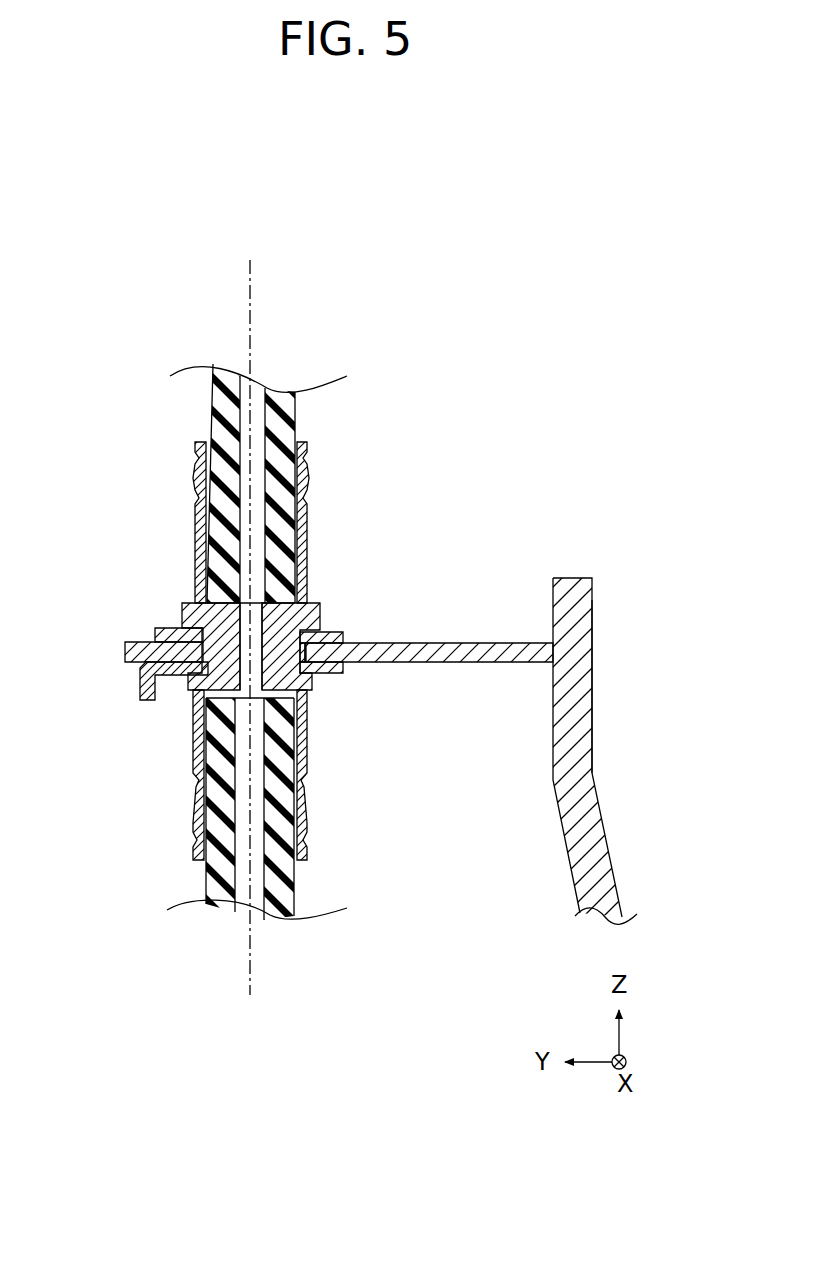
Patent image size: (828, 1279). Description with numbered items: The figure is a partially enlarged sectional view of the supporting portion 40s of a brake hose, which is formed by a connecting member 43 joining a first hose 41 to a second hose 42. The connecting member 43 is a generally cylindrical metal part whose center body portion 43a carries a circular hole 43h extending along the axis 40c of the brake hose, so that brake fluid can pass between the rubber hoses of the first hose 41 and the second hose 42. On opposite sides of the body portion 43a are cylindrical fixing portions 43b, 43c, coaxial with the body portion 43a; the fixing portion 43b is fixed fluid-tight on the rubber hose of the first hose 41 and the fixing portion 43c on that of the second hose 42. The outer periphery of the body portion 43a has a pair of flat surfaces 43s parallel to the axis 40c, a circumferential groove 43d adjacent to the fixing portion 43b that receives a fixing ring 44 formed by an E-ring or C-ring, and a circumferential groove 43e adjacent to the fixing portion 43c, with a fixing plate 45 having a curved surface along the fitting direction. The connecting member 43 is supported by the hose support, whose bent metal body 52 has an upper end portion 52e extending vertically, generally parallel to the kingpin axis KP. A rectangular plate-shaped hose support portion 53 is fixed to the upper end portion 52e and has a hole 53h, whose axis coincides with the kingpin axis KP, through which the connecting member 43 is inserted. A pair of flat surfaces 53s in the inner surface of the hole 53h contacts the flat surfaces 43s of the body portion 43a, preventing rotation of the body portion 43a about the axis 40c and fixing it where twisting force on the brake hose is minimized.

The kingpin axis KP is at (252, 322).
The axis of the brake hose 40c is at (324, 623).
The supporting portion 40s is at (269, 643).
The first hose 41 is at (207, 413).
The second hose 42 is at (207, 888).
The connecting member 43 is at (317, 545).
The body portion 43a is at (228, 633).
The fixing portion 43b is at (195, 493).
The fixing portion 43c is at (197, 770).
The groove 43d is at (337, 633).
The groove 43e is at (325, 672).
The hole 43h is at (247, 633).
The flat surfaces 43s is at (325, 650).
The fixing ring 44 is at (172, 633).
The fixing plate 45 is at (140, 687).
The body 52 is at (602, 868).
The upper end portion 52e is at (592, 693).
The hose support portion 53 is at (452, 642).
The hole 53h is at (369, 610).
The flat surfaces 53s is at (305, 647).